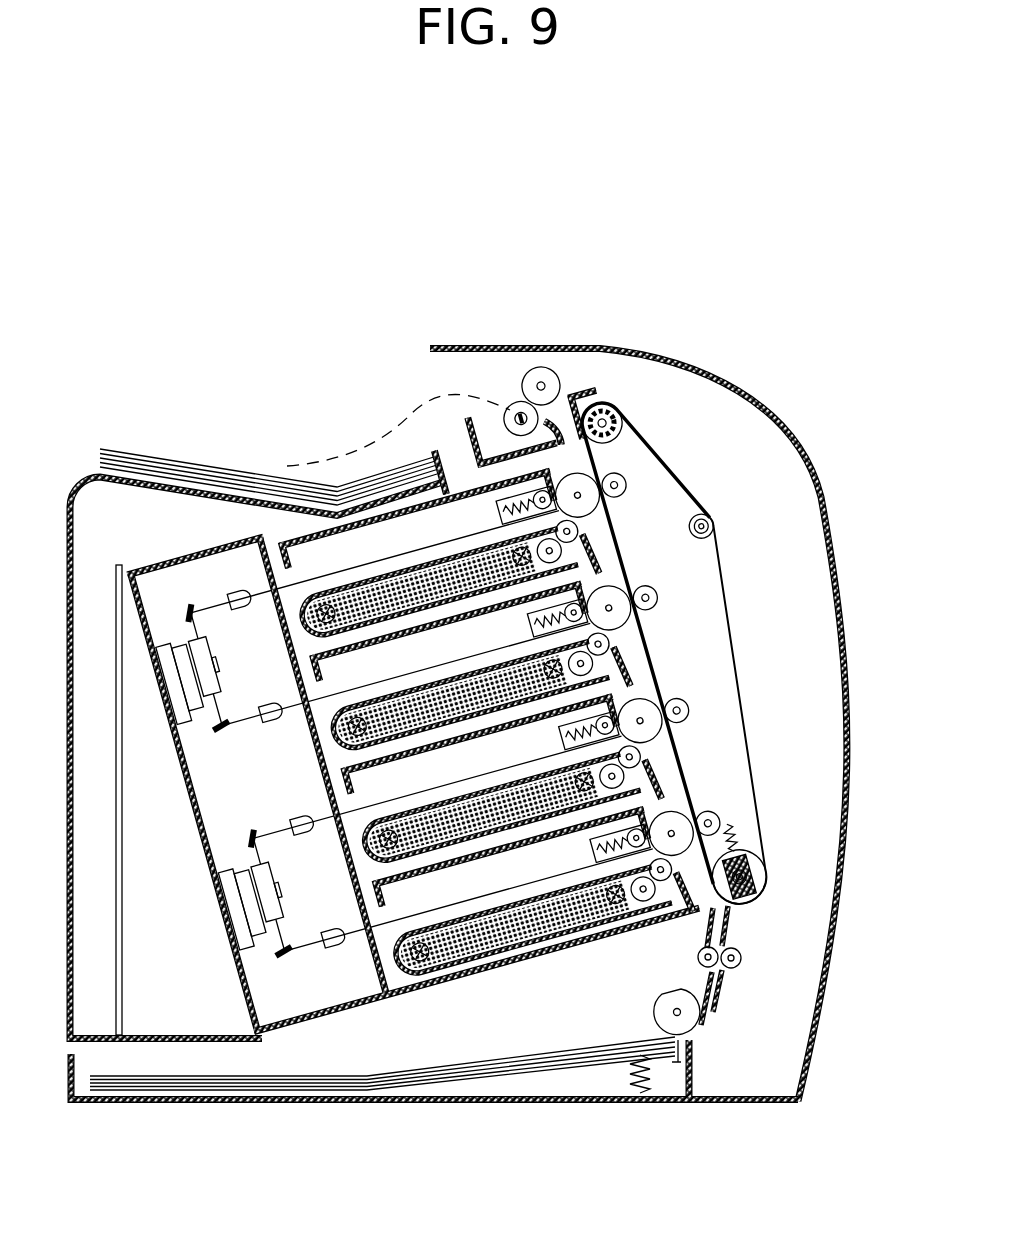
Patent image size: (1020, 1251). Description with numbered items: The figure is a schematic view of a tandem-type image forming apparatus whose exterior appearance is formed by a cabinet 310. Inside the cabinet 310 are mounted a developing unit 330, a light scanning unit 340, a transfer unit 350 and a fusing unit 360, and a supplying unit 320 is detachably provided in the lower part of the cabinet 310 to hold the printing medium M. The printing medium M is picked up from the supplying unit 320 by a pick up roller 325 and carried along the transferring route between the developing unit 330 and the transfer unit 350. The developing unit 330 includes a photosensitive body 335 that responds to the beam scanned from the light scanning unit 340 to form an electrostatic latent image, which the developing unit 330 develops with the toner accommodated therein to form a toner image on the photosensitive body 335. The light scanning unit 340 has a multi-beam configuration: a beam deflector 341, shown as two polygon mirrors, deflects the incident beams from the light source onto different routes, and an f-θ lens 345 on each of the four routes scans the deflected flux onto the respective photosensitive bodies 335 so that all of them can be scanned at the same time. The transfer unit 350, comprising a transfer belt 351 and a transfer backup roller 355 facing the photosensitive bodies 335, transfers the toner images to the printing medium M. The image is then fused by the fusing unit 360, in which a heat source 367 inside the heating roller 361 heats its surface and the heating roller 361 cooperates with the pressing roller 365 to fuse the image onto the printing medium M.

The cabinet 310 is at (562, 346).
The supplying unit 320 is at (707, 1064).
The pick up roller 325 is at (670, 1000).
The developing unit 330 is at (297, 636).
The photosensitive body 335 is at (593, 510).
The light scanning unit 340 is at (167, 553).
The beam deflector 341 is at (213, 643).
The f-θ lens 345 is at (242, 593).
The transfer unit 350 is at (754, 622).
The transfer belt 351 is at (735, 647).
The transfer backup roller 355 is at (630, 477).
The fusing unit 360 is at (482, 374).
The heating roller 361 is at (508, 405).
The pressing roller 365 is at (535, 366).
The heat source 367 is at (517, 419).
The printing medium M is at (522, 1057).